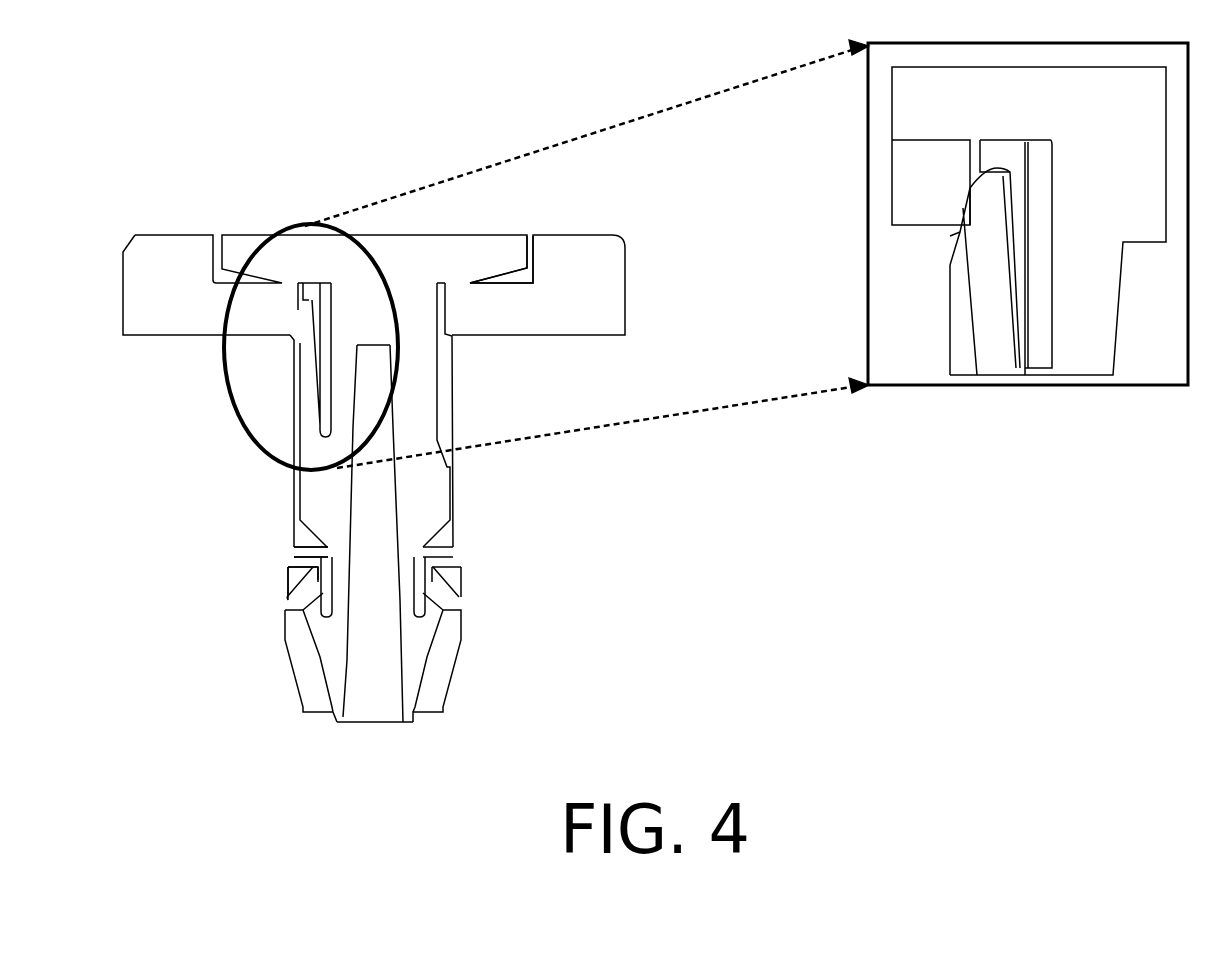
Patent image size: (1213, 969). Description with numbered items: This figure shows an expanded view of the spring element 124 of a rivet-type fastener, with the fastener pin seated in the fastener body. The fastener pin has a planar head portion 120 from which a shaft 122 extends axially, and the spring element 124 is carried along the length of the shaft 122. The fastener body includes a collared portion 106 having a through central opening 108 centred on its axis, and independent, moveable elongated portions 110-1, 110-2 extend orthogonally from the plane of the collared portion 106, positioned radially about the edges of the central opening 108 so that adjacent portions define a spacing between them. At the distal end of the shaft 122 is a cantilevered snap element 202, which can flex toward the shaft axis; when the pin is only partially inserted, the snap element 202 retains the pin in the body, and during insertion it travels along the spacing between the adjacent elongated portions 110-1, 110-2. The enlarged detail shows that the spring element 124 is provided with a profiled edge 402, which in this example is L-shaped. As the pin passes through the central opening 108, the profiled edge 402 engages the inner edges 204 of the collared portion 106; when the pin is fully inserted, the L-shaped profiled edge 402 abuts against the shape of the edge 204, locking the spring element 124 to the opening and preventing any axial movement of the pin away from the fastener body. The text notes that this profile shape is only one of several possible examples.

The head portion 120 is at (238, 237).
The central opening 108 is at (529, 233).
The spring element 124 is at (293, 389).
The shaft 122 is at (427, 415).
The elongated portion 110-1 is at (305, 537).
The elongated portion 110-2 is at (442, 538).
The cantilevered snap element 202 is at (288, 575).
The collared portion 106 is at (972, 257).
The inner edges of the central opening 204 is at (968, 179).
The profiled edge 402 is at (957, 236).